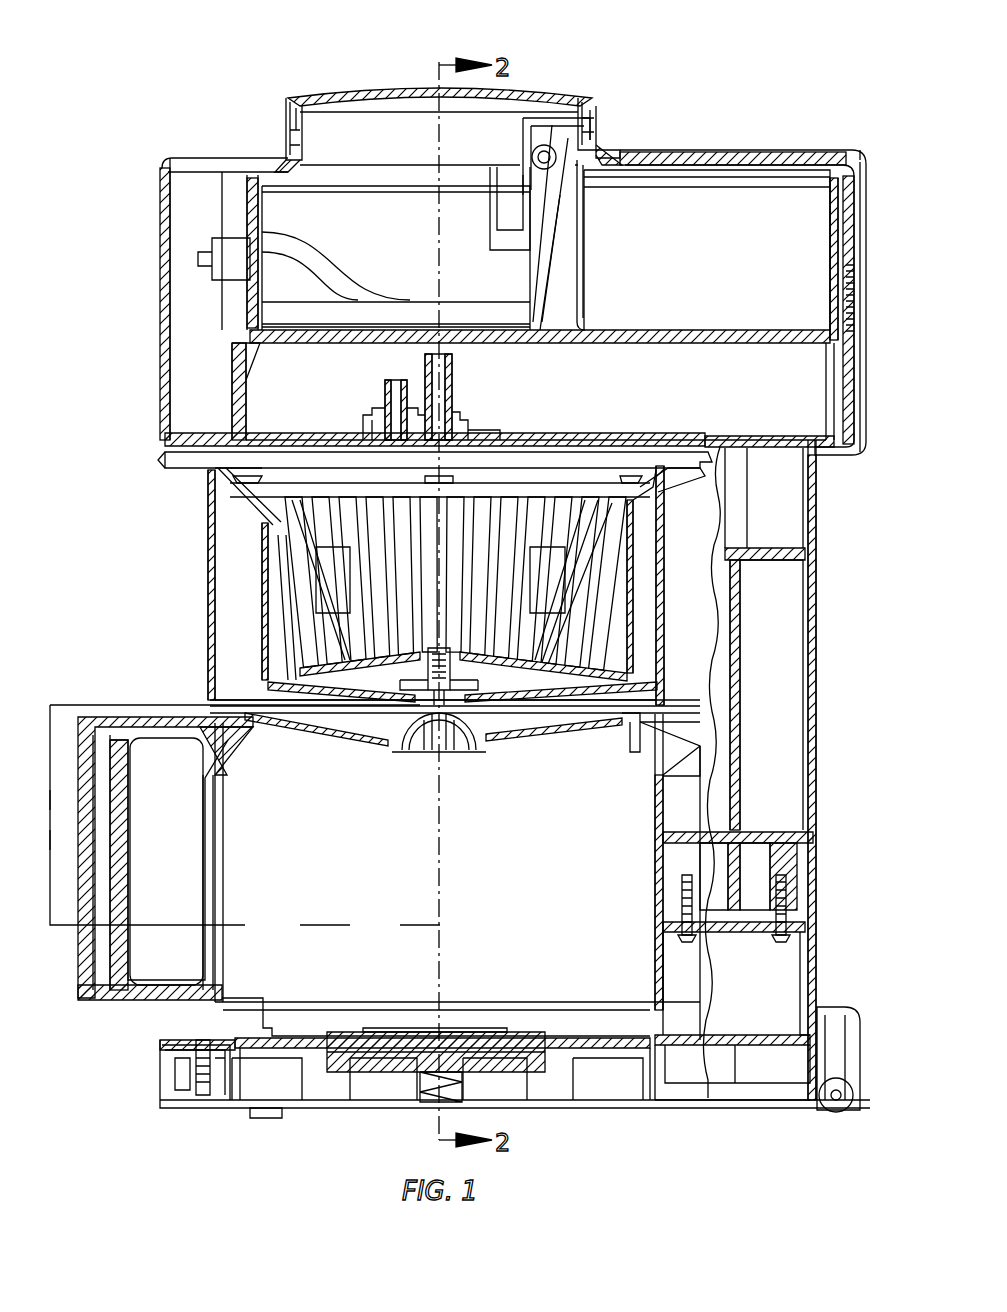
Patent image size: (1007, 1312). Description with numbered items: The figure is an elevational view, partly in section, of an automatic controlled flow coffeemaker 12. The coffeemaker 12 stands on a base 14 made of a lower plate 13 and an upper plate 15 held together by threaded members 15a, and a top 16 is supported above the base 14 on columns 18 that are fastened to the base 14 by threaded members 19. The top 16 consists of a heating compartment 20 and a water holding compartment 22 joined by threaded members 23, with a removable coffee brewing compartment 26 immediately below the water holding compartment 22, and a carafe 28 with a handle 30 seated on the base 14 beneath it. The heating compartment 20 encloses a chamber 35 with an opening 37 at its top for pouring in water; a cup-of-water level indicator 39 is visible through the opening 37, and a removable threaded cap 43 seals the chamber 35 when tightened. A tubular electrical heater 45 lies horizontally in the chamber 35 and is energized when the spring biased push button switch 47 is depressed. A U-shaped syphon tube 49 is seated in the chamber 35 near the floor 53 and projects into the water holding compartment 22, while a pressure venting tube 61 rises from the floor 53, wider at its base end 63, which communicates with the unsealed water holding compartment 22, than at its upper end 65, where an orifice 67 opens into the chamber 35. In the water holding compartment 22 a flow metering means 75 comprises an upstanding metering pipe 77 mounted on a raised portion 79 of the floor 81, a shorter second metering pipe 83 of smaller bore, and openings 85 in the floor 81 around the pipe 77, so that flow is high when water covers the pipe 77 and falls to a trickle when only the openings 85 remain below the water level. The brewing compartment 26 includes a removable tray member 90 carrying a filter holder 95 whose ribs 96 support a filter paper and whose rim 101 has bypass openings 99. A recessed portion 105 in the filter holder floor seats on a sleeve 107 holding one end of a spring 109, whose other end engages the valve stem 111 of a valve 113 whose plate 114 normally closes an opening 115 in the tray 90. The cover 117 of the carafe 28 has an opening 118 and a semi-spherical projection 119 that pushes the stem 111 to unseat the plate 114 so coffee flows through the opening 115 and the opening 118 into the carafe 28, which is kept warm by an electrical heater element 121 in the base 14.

The coffeemaker 12 is at (716, 68).
The lower plate 13 is at (320, 1108).
The base 14 is at (172, 1146).
The upper plate 15 is at (165, 1067).
The threaded members 15a is at (200, 1042).
The top 16 is at (793, 145).
The columns 18 is at (828, 642).
The threaded members 19 is at (687, 944).
The heating compartment 20 is at (694, 160).
The water holding compartment 22 is at (222, 394).
The threaded members 23 is at (846, 295).
The coffee brewing compartment 26 is at (243, 624).
The carafe 28 is at (375, 872).
The handle 30 is at (130, 800).
The chamber 35 is at (707, 250).
The opening 37 is at (308, 126).
The cup-of-water level indicator 39 is at (498, 262).
The removable threaded cap 43 is at (393, 88).
The tubular electrical heater 45 is at (386, 276).
The spring biased push button switch 47 is at (213, 246).
The U-shaped syphon tube 49 is at (523, 140).
The floor 53 is at (322, 343).
The pressure venting tube 61 is at (584, 263).
The base end 63 is at (578, 296).
The upper end 65 is at (598, 142).
The orifice 67 is at (567, 135).
The flow metering means 75 is at (482, 394).
The metering pipe 77 is at (455, 376).
The raised portion 79 is at (496, 438).
The floor 81 is at (614, 438).
The second metering pipe 83 is at (386, 395).
The openings 85 is at (346, 438).
The removable tray member 90 is at (196, 474).
The filter holder 95 is at (633, 598).
The ribs 96 is at (514, 518).
The openings 99 is at (264, 479).
The rim 101 is at (440, 482).
The recessed portion 105 is at (412, 664).
The sleeve 107 is at (520, 664).
The spring 109 is at (470, 715).
The valve stem 111 is at (440, 738).
The valve 113 is at (414, 721).
The plate 114 is at (460, 738).
The opening 115 is at (443, 762).
The cover 117 is at (540, 733).
The opening 118 is at (402, 748).
The semi-spherical projection 119 is at (432, 740).
The electrical heater element 121 is at (494, 1028).